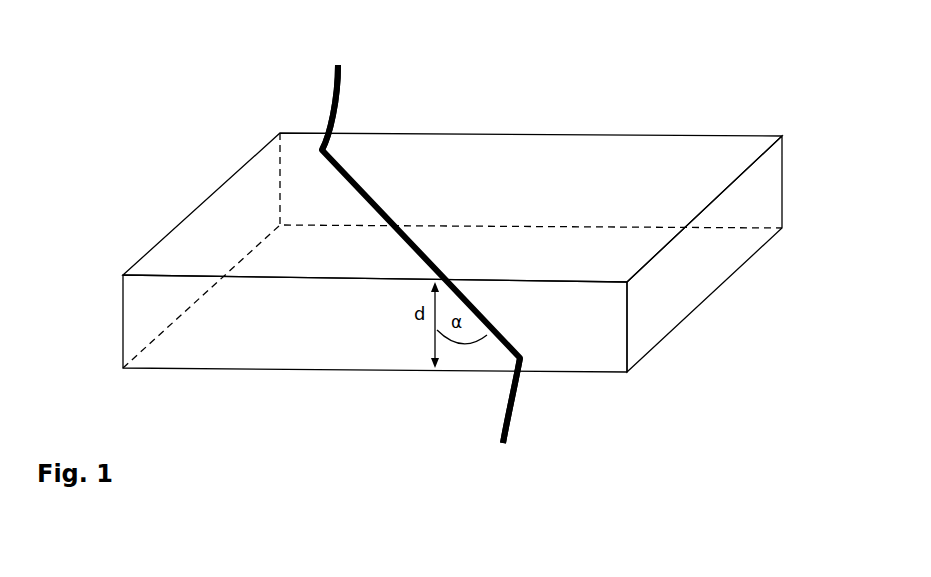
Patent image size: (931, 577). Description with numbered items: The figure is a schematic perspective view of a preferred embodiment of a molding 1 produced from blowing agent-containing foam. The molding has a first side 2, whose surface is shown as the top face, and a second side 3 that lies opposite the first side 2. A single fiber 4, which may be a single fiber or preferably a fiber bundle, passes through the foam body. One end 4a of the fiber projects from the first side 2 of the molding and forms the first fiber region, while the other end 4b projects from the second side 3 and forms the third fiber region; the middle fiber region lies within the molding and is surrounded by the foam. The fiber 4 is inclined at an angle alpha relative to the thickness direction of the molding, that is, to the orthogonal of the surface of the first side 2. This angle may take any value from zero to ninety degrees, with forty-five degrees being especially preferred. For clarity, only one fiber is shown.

The molding 1 is at (718, 108).
The first side 2 is at (249, 213).
The second side 3 is at (563, 372).
The fiber 4 is at (398, 212).
The end of the fiber 4a is at (343, 90).
The other end of the fiber 4b is at (502, 442).